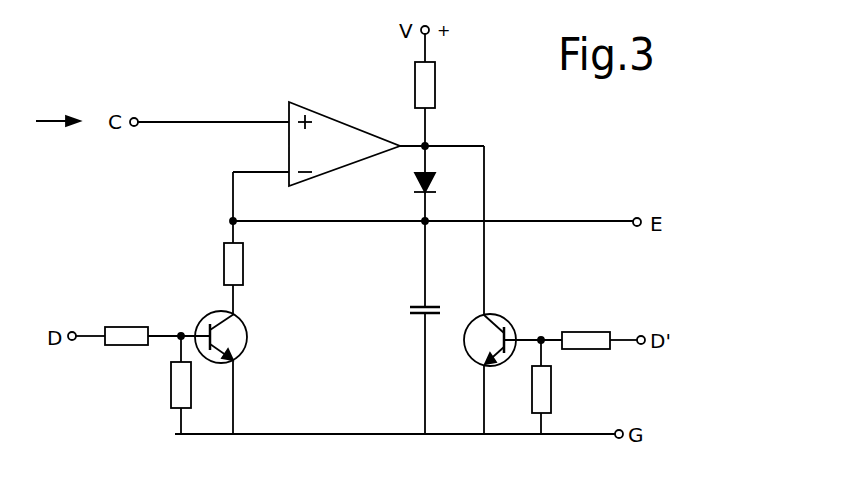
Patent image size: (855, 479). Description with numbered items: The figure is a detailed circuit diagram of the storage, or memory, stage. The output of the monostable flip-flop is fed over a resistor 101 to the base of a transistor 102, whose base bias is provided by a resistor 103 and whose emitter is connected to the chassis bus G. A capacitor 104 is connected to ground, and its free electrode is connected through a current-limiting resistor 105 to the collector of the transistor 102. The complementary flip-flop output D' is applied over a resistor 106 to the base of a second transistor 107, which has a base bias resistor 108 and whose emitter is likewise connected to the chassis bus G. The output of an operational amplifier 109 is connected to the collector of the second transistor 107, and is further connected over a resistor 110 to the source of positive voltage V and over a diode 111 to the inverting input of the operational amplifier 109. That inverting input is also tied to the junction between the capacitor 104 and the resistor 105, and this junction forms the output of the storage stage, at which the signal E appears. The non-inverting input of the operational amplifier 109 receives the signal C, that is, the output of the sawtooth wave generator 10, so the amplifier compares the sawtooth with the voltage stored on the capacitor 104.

The sawtooth wave generator 10 is at (126, 162).
The resistor 101 is at (127, 326).
The transistor 102 is at (247, 331).
The resistor 103 is at (169, 386).
The capacitor 104 is at (405, 307).
The current-limiting resistor 105 is at (244, 266).
The resistor 106 is at (573, 332).
The second transistor 107 is at (506, 304).
The base bias resistor 108 is at (554, 389).
The operational amplifier 109 is at (353, 157).
The resistor 110 is at (436, 89).
The diode 111 is at (436, 185).